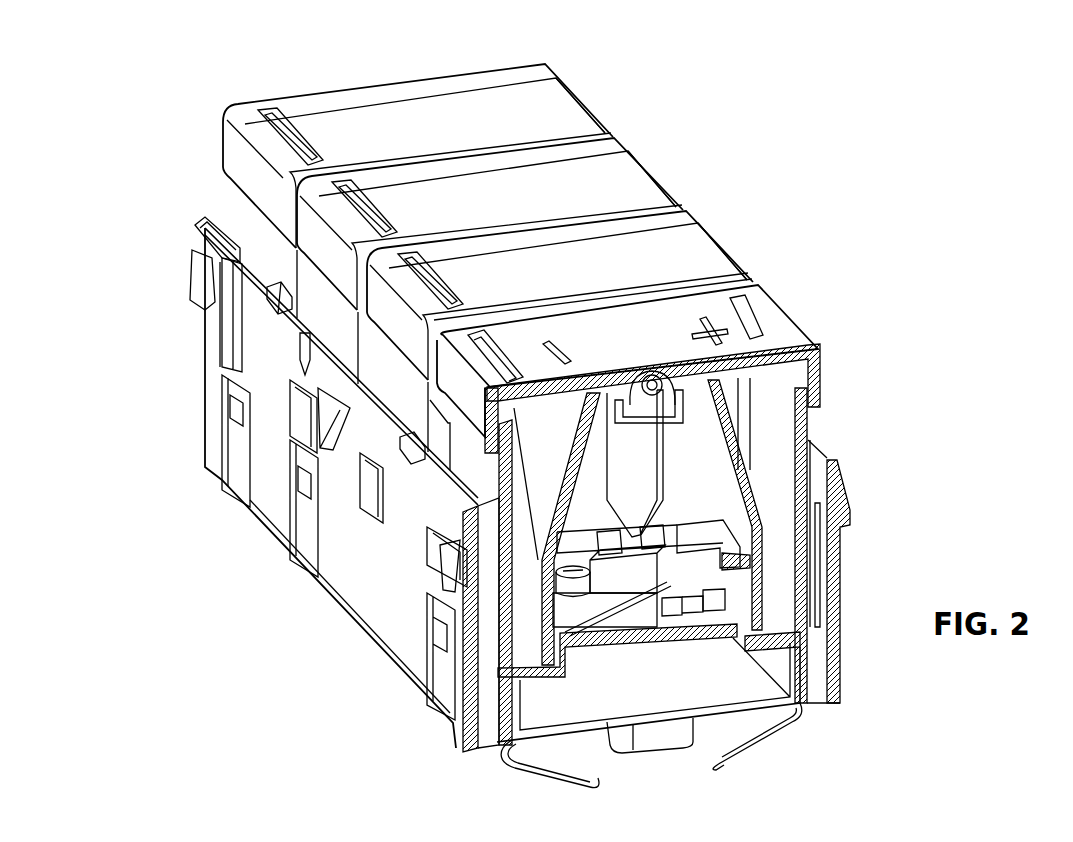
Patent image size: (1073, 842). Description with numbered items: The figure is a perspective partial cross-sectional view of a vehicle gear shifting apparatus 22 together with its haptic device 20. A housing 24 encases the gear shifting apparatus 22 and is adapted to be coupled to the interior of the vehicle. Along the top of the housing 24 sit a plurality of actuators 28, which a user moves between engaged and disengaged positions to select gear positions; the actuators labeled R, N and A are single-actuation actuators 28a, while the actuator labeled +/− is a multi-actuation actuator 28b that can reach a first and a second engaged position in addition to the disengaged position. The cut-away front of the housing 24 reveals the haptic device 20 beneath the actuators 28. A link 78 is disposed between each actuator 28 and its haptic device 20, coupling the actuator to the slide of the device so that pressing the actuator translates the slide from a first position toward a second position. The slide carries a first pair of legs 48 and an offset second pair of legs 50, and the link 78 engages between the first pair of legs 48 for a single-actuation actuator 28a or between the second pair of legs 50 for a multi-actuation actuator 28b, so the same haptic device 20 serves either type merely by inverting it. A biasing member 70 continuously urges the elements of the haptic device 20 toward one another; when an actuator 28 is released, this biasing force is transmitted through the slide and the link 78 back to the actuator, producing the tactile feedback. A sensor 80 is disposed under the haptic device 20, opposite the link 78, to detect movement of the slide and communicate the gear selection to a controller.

The gear shifting apparatus 22 is at (645, 65).
The actuators 28 is at (305, 223).
The single-actuation actuators 28a is at (582, 118).
The multi-actuation actuator 28b is at (782, 323).
The housing 24 is at (355, 603).
The link 78 is at (643, 450).
The haptic device 20 is at (646, 582).
The second pair of legs 50 is at (618, 542).
The biasing member 70 is at (645, 600).
The first pair of legs 48 is at (680, 600).
The sensor 80 is at (698, 610).